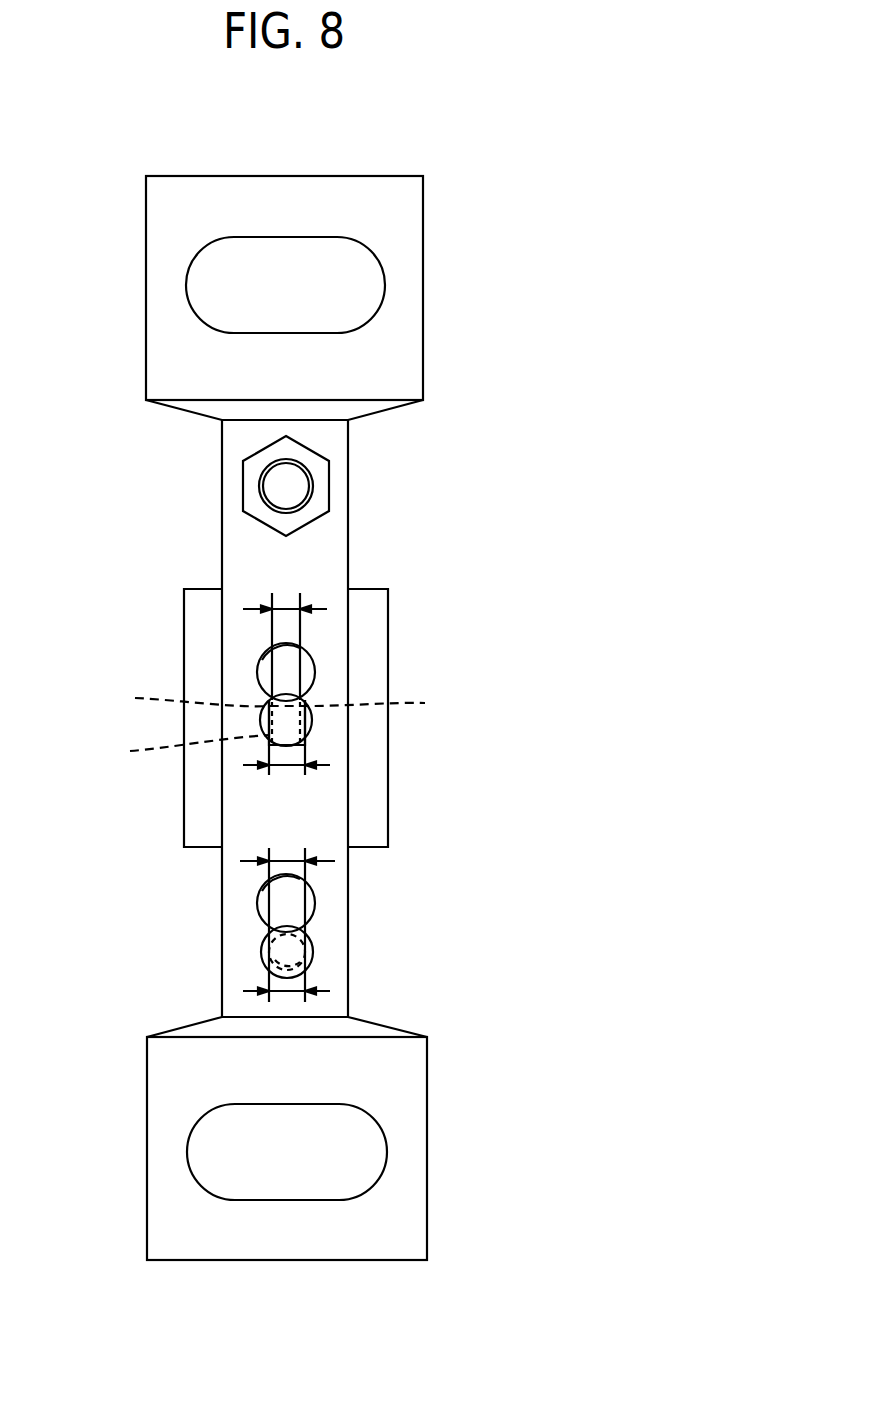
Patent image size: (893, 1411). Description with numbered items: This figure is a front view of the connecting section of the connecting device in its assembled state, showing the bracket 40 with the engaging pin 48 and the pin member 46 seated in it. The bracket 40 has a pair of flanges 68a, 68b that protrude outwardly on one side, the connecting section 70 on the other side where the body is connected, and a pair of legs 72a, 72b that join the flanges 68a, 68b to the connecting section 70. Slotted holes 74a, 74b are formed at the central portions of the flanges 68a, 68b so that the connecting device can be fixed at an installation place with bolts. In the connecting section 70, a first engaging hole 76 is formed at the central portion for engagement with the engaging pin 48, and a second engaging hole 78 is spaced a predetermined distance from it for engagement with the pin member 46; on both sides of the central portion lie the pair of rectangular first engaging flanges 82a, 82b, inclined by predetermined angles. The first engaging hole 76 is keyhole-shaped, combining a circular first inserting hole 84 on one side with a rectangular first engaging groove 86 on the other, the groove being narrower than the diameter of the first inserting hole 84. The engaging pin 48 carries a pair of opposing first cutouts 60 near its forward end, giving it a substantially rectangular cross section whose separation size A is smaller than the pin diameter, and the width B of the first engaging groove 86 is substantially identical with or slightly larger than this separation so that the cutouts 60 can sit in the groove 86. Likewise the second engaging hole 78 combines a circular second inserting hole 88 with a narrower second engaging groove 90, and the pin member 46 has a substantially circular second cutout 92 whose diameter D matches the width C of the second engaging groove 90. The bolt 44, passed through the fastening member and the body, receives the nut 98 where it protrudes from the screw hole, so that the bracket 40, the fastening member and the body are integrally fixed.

The bracket 40 is at (430, 1112).
The bolt 44 is at (285, 485).
The pin member 46 is at (268, 948).
The engaging pin 48 is at (313, 720).
The first cutouts 60 is at (278, 699).
The flange 68a is at (405, 287).
The flange 68b is at (333, 1226).
The connecting section 70 is at (285, 553).
The leg 72a is at (355, 409).
The leg 72b is at (355, 1028).
The slotted hole 74a is at (212, 288).
The slotted hole 74b is at (213, 1152).
The first engaging hole 76 is at (318, 658).
The second engaging hole 78 is at (320, 896).
The first engaging flange 82a is at (372, 668).
The first engaging flange 82b is at (205, 806).
The first inserting hole 84 is at (272, 664).
The first engaging groove 86 is at (184, 748).
The second inserting hole 88 is at (262, 900).
The second engaging groove 90 is at (313, 955).
The second cutout 92 is at (313, 938).
The nut 98 is at (322, 491).